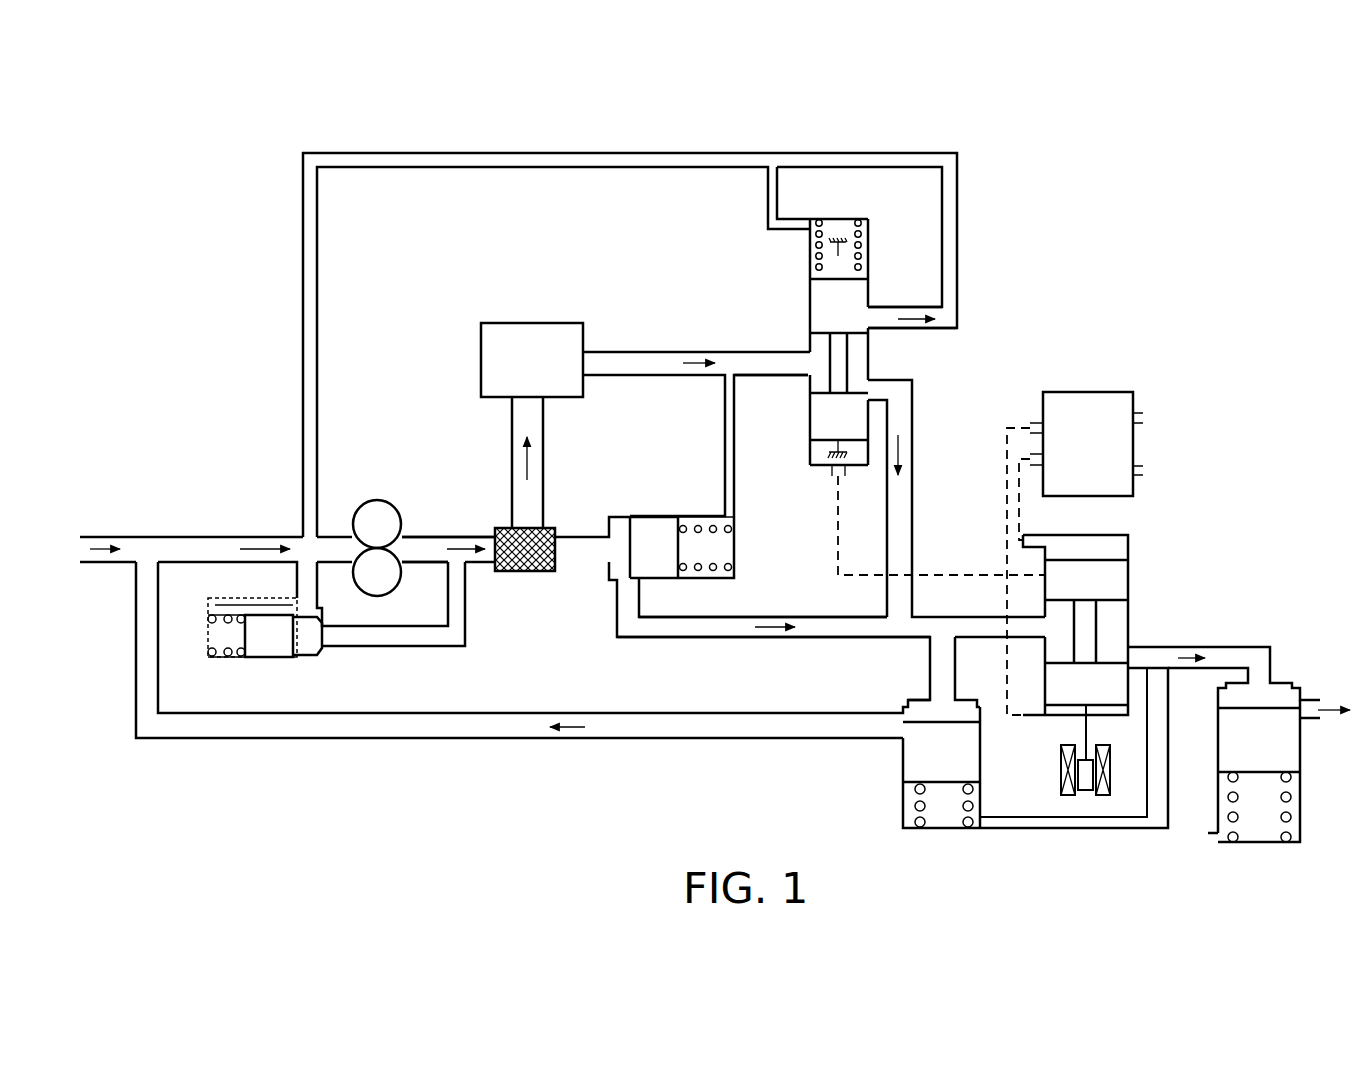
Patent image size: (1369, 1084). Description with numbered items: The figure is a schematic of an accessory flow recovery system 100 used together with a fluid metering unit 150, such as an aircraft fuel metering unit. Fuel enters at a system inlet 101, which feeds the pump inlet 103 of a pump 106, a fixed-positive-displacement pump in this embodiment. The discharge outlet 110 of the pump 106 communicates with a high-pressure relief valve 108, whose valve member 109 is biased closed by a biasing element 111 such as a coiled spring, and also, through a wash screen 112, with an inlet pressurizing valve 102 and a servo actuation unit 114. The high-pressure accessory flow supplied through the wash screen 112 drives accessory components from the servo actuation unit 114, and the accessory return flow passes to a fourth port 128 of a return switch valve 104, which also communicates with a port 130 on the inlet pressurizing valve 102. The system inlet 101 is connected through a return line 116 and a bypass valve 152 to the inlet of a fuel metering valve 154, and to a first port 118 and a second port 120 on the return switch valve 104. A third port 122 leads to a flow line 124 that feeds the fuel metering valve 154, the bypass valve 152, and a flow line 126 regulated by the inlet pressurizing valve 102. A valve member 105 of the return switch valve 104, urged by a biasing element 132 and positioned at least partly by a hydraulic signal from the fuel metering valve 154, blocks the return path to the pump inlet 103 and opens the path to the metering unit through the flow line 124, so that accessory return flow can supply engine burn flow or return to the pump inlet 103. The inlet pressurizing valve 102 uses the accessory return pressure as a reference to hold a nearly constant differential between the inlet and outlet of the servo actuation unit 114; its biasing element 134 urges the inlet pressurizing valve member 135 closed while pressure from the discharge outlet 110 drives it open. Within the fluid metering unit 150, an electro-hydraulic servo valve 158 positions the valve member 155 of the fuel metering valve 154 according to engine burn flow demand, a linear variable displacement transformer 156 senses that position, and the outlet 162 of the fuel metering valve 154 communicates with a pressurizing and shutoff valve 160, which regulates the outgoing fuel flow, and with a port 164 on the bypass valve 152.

The accessory flow recovery system 100 is at (1022, 236).
The system inlet 101 is at (75, 540).
The inlet pressurizing valve 102 is at (721, 496).
The pump inlet 103 is at (340, 549).
The return switch valve 104 is at (887, 346).
The valve member 105 is at (808, 297).
The pump 106 is at (377, 500).
The high-pressure relief valve 108 is at (308, 657).
The valve member 109 is at (274, 653).
The discharge outlet 110 is at (447, 522).
The biasing element 111 is at (210, 620).
The wash screen 112 is at (537, 572).
The servo actuation unit 114 is at (532, 322).
The return line 116 is at (400, 740).
The first port 118 is at (799, 198).
The second port 120 is at (878, 312).
The third port 122 is at (888, 389).
The flow line 124 is at (912, 520).
The flow line 126 is at (790, 650).
The fourth port 128 is at (810, 357).
The port 130 is at (743, 512).
The biasing element 132 is at (810, 233).
The biasing element 134 is at (727, 565).
The inlet pressurizing valve member 135 is at (658, 516).
The fluid metering unit 150 is at (1262, 492).
The bypass valve 152 is at (996, 765).
The fluid metering valve 154 is at (1094, 676).
The valve member 155 is at (1130, 574).
The linear variable displacement transformer 156 is at (1060, 765).
The electro-hydraulic servo valve 158 is at (1097, 392).
The pressurizing and shutoff valve 160 is at (1300, 822).
The outlet 162 is at (1165, 652).
The port 164 is at (985, 822).